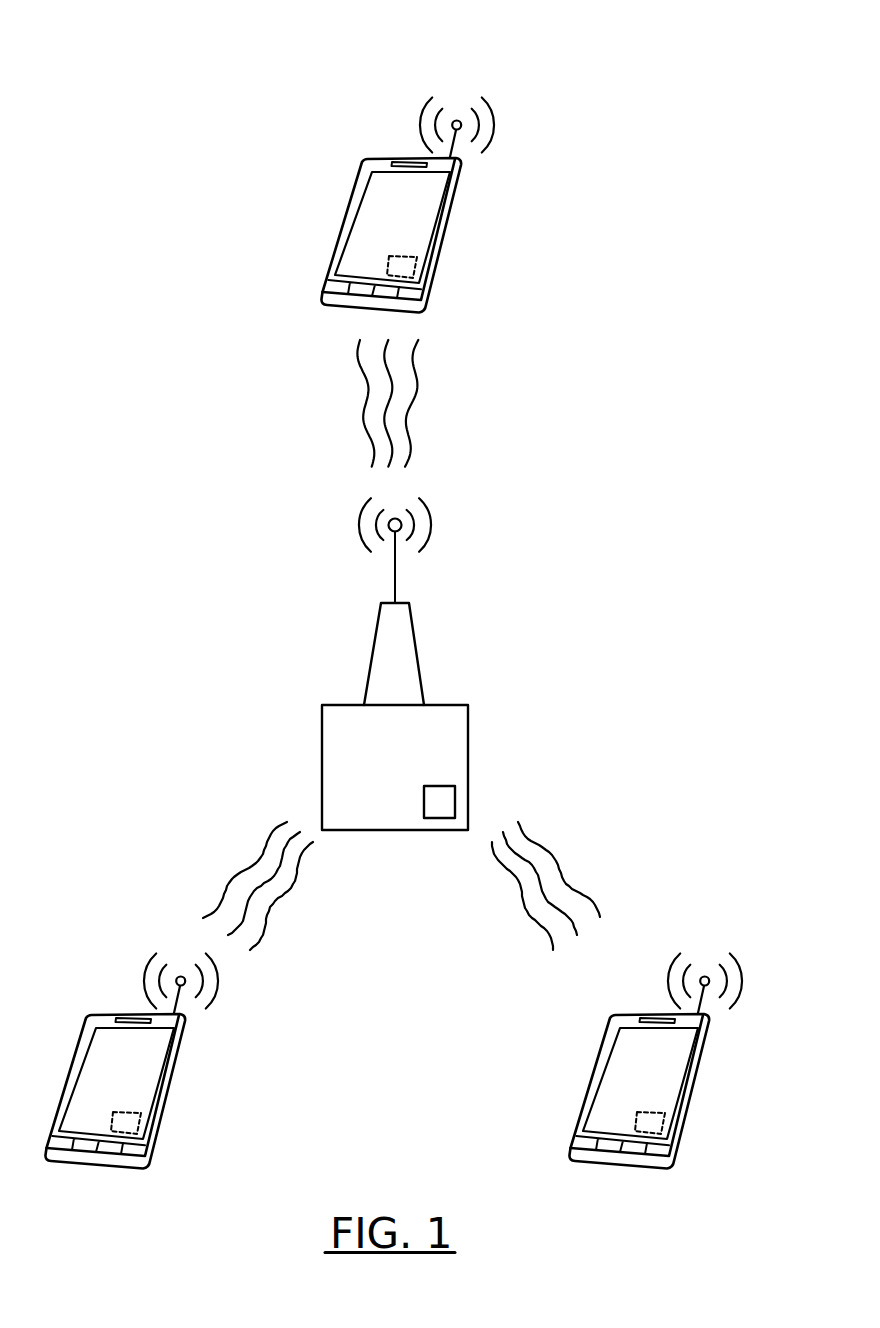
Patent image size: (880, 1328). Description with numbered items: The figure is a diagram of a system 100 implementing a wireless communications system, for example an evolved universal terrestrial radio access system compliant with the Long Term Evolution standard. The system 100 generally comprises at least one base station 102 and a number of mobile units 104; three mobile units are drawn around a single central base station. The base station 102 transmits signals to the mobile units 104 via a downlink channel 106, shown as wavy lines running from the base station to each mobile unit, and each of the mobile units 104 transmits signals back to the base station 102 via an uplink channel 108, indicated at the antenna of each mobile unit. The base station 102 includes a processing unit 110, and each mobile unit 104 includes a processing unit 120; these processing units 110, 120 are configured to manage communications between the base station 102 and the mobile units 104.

The system 100 is at (222, 42).
The base station 102 is at (347, 705).
The mobile unit 104 is at (385, 156).
The downlink channel 106 is at (363, 388).
The uplink channel 108 is at (495, 127).
The processing unit 110 is at (423, 812).
The processing unit 120 is at (410, 253).